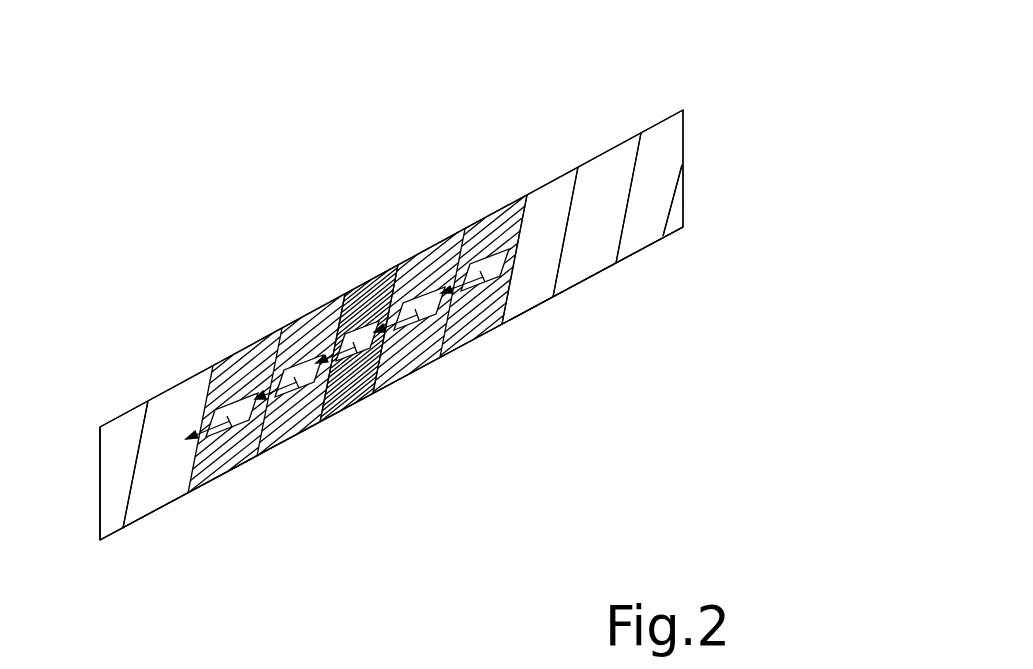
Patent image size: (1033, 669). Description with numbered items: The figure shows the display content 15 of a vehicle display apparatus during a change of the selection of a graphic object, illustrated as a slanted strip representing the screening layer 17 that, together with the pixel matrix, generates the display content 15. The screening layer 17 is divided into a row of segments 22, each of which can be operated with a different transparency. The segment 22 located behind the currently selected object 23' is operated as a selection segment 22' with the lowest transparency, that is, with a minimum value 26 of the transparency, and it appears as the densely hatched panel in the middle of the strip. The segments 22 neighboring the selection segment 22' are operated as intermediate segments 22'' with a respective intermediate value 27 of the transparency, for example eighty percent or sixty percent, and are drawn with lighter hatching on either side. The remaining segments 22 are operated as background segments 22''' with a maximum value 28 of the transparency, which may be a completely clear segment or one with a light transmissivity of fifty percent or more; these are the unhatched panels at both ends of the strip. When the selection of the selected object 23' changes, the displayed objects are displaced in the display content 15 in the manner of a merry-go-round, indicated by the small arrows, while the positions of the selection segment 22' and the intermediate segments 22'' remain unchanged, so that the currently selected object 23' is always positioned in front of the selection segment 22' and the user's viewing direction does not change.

The display content 15 is at (175, 248).
The screening layer 17 is at (468, 226).
The segment 22 is at (402, 366).
The selection segment 22' is at (359, 292).
The intermediate segment 22'' is at (357, 292).
The background segment 22''' is at (374, 270).
The selected object 23' is at (335, 365).
The minimum value of the transparency 26 is at (384, 272).
The intermediate value of the transparency 27 is at (230, 457).
The maximum value of the transparency 28 is at (170, 485).